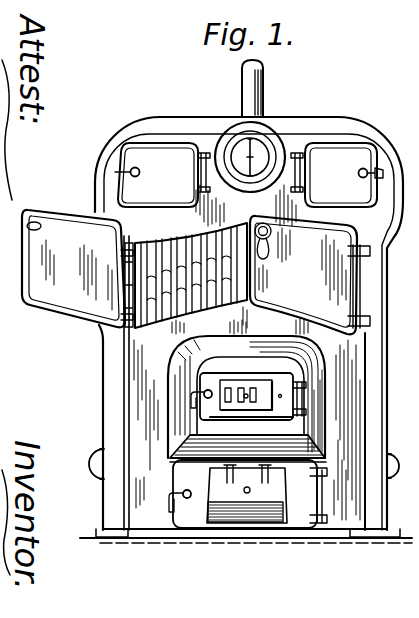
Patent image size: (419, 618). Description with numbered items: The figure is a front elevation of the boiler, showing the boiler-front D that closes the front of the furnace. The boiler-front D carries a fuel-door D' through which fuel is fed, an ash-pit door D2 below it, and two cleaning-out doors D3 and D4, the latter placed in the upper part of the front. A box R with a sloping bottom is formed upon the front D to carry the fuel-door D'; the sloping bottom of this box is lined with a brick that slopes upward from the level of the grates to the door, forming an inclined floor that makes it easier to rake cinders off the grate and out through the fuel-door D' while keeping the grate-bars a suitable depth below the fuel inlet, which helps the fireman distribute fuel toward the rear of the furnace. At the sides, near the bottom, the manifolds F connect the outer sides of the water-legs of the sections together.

The boiler-front D is at (246, 301).
The fuel-door D' is at (227, 404).
The ash-pit door D2 is at (248, 494).
The cleaning-out door D3 is at (196, 272).
The cleaning-out door D4 is at (249, 175).
The box R is at (247, 398).
The manifold F is at (90, 463).